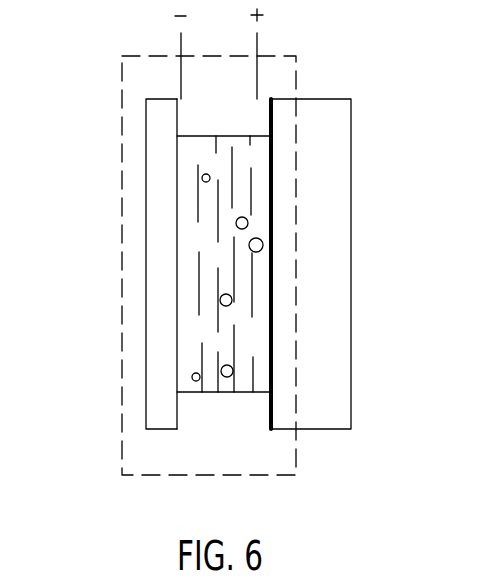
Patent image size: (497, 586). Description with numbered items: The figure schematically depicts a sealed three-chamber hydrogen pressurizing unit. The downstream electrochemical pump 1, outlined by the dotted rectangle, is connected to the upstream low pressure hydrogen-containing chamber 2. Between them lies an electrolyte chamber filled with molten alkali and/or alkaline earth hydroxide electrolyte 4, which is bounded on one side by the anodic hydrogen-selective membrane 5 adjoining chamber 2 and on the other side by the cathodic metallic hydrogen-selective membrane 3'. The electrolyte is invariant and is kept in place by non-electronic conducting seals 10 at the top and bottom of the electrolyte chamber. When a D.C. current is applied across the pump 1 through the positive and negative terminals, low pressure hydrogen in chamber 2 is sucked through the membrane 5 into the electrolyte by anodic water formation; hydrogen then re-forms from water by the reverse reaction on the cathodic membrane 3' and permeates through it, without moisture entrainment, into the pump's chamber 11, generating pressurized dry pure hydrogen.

The electrochemical pump 1 is at (122, 266).
The low pressure hydrogen-containing chamber 2 is at (320, 262).
The cathodic metallic hydrogen-selective membrane 3' is at (125, 264).
The electrolyte 4 is at (185, 171).
The anodic hydrogen-selective membrane 5 is at (275, 402).
The non-electronic conducting seals 10 is at (243, 122).
The pump chamber 11 is at (158, 125).